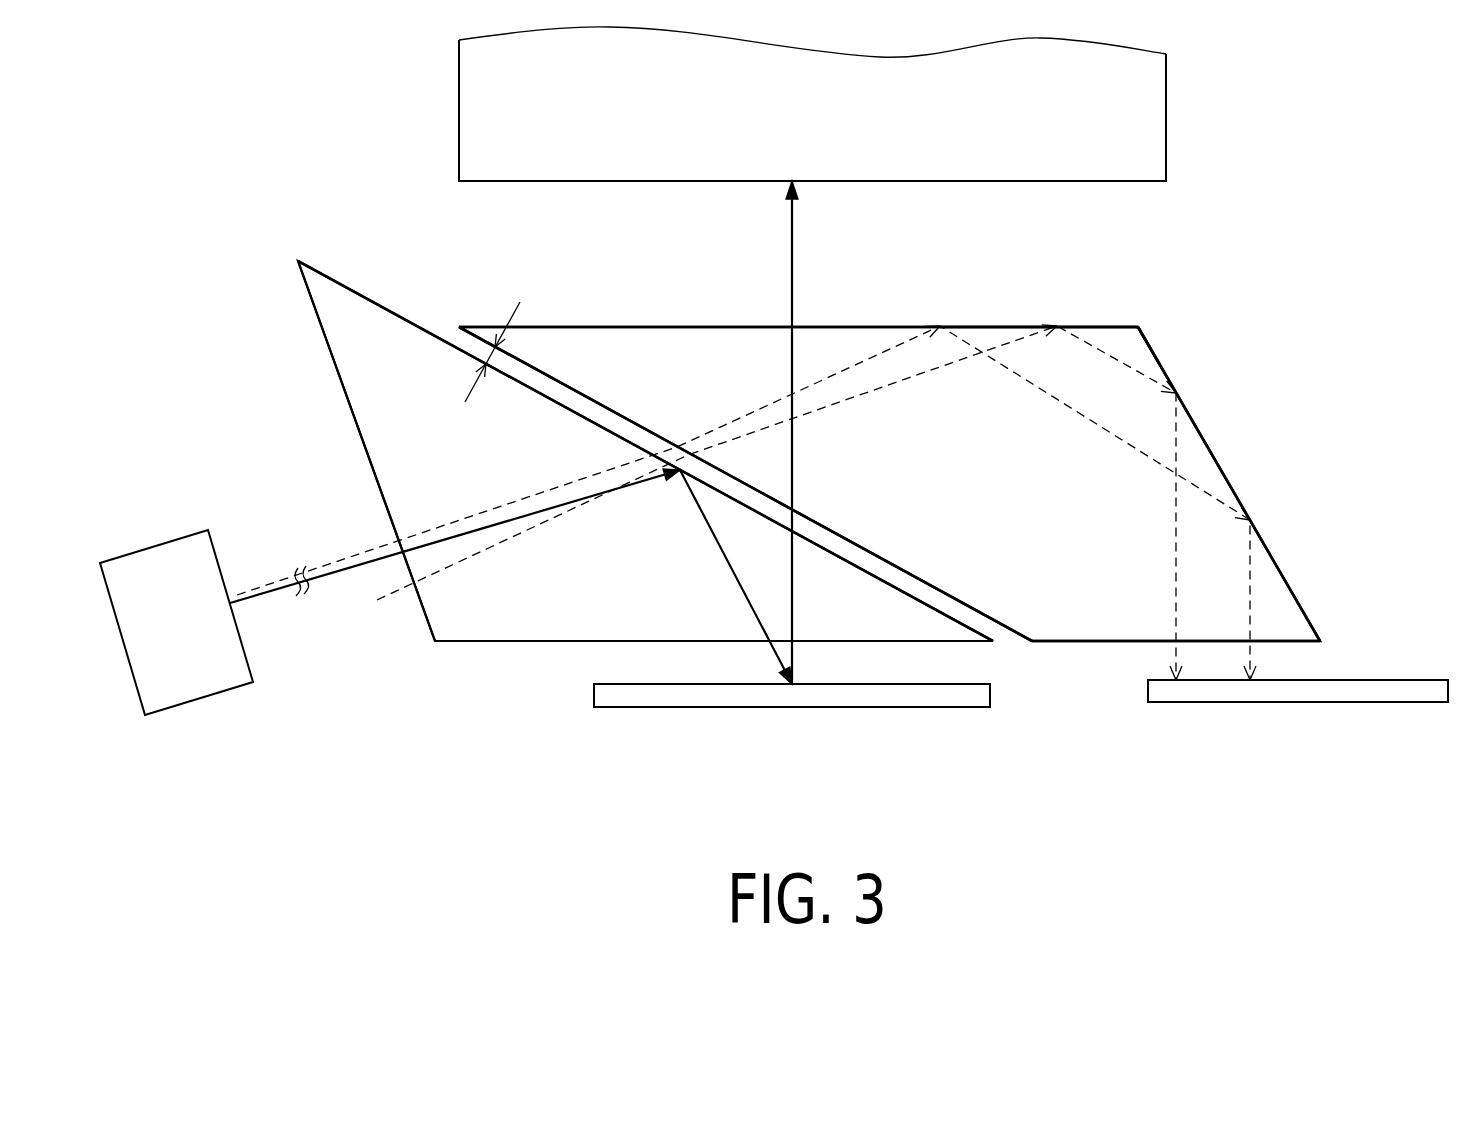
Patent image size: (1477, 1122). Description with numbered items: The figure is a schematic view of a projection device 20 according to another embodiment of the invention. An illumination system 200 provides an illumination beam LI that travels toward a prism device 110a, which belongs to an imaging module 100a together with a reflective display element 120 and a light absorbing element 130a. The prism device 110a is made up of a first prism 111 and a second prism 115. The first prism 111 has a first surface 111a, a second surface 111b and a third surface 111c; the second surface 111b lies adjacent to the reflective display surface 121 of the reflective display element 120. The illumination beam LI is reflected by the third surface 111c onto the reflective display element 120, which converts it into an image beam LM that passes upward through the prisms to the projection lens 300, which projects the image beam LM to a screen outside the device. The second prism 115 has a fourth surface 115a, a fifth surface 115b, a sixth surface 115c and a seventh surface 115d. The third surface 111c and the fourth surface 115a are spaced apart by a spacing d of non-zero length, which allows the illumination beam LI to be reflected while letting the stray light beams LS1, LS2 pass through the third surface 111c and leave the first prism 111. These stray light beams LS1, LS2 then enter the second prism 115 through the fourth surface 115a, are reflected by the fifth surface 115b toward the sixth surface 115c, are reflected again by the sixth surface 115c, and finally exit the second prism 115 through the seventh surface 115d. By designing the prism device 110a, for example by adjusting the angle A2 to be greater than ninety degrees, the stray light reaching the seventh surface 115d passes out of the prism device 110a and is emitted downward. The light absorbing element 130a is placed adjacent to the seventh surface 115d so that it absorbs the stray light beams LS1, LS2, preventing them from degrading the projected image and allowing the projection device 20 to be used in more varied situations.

The projection device 20 is at (262, 121).
The projection lens 300 is at (1140, 112).
The first prism 111 is at (495, 648).
The first surface 111a is at (303, 320).
The second surface 111b is at (562, 662).
The third surface 111c is at (388, 332).
The second prism 115 is at (1103, 645).
The fourth surface 115a is at (870, 572).
The fifth surface 115b is at (687, 342).
The sixth surface 115c is at (1290, 602).
The seventh surface 115d is at (1073, 624).
The prism device 110a is at (1057, 297).
The angle A2 is at (1142, 358).
The spacing d is at (487, 337).
The reflective display element 120 is at (683, 698).
The reflective display surface 121 is at (918, 679).
The light absorbing element 130a is at (1240, 690).
The imaging module 100a is at (1171, 745).
The illumination system 200 is at (148, 575).
The illumination beam LI is at (273, 598).
The image beam LM is at (795, 258).
The stray light beam LS1 is at (383, 600).
The stray light beam LS2 is at (358, 560).